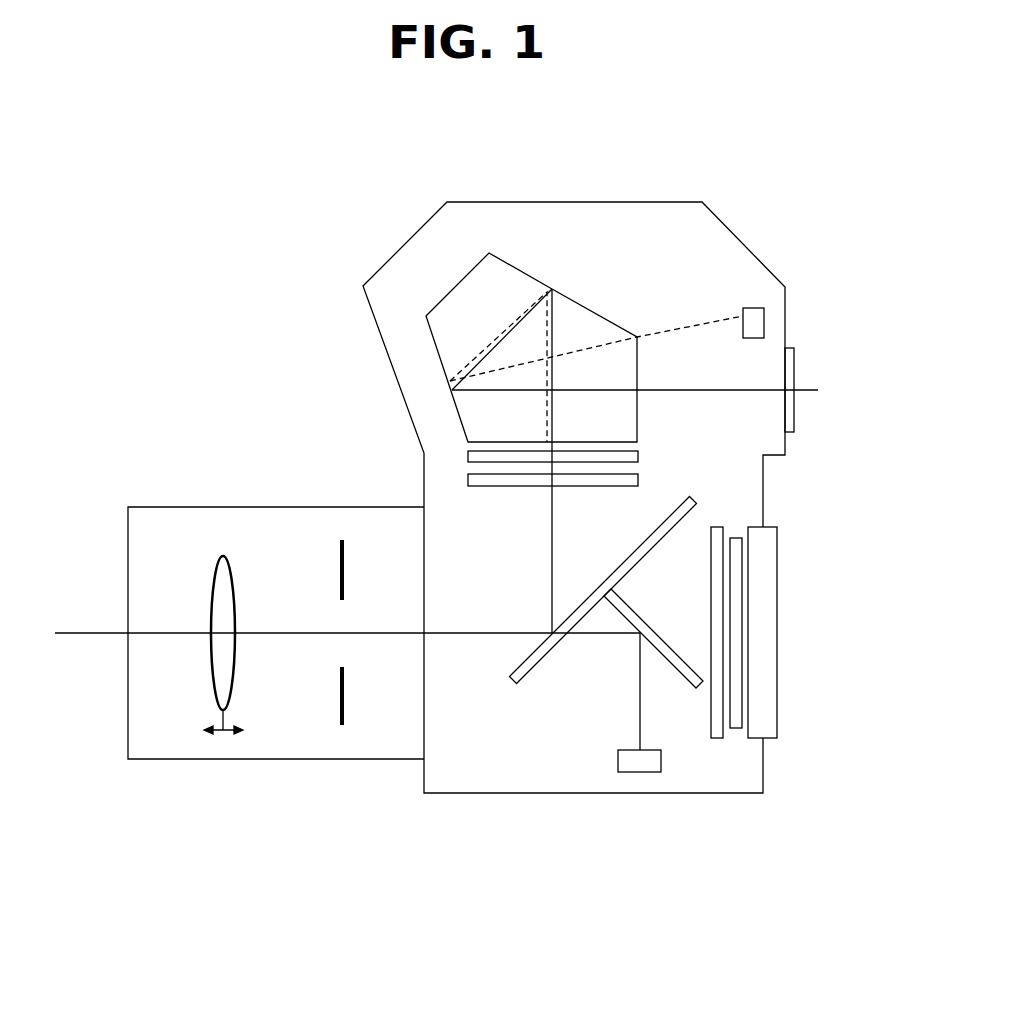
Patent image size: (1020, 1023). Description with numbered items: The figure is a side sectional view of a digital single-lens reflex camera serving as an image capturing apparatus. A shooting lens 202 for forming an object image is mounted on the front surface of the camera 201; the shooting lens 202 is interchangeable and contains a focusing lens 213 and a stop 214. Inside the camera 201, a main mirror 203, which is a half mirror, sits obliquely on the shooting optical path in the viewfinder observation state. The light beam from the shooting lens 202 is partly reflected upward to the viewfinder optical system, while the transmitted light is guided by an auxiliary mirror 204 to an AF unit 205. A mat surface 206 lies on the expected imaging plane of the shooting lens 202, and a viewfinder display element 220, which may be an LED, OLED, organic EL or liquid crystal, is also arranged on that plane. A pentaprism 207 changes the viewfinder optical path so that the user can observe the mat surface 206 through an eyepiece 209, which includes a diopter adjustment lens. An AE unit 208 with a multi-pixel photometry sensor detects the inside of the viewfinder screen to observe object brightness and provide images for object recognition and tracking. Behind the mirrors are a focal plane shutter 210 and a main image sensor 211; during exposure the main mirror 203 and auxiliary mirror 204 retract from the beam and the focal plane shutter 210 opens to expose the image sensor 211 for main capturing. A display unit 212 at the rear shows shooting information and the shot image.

The camera 201 is at (508, 202).
The shooting lens 202 is at (286, 507).
The main mirror 203 is at (525, 678).
The auxiliary mirror 204 is at (657, 632).
The AF unit 205 is at (622, 772).
The mat surface 206 is at (492, 486).
The pentaprism 207 is at (521, 268).
The AE unit 208 is at (764, 318).
The eyepiece 209 is at (794, 362).
The focal plane shutter 210 is at (716, 738).
The main image sensor 211 is at (736, 728).
The display unit 212 is at (768, 738).
The focusing lens 213 is at (204, 557).
The stop 214 is at (338, 717).
The viewfinder display element 220 is at (638, 455).